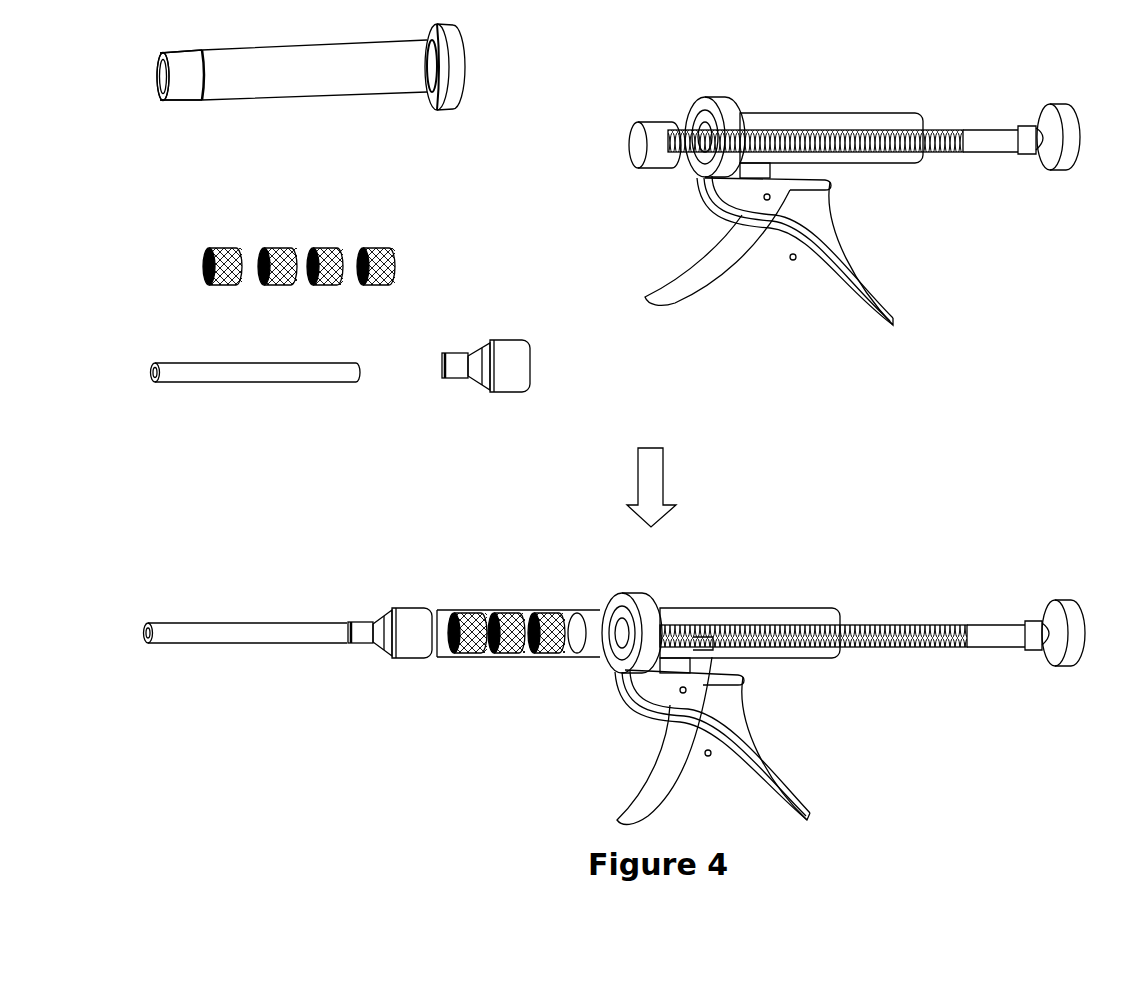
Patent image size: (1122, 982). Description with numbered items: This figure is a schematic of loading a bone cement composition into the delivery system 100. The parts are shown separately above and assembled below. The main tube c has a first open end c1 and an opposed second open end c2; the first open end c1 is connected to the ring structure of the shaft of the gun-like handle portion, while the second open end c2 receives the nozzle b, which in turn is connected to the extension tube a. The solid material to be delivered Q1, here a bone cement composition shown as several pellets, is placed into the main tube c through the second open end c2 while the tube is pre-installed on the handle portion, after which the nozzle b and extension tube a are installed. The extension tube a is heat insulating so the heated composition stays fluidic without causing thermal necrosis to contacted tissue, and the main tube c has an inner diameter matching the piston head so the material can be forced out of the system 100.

The main tube c is at (320, 95).
The first open end c1 is at (462, 95).
The second open end c2 is at (187, 108).
The solid material to be delivered Q1 is at (405, 267).
The extension tube a is at (240, 382).
The nozzle b is at (495, 392).
The delivery system 100 is at (836, 568).